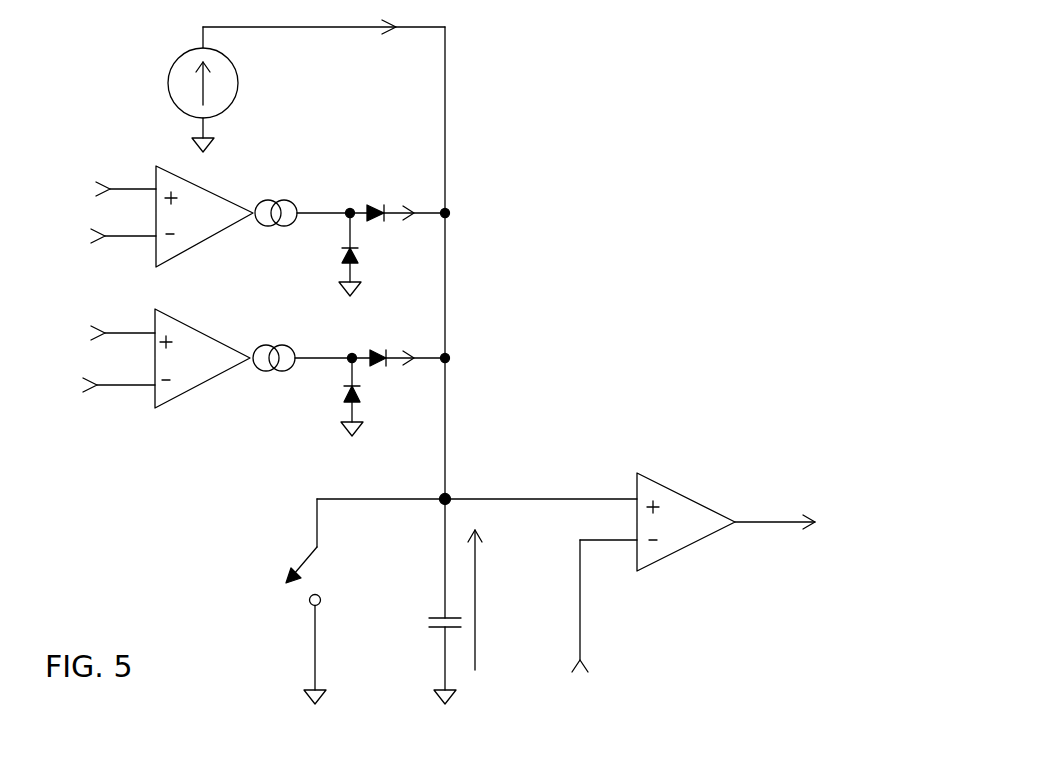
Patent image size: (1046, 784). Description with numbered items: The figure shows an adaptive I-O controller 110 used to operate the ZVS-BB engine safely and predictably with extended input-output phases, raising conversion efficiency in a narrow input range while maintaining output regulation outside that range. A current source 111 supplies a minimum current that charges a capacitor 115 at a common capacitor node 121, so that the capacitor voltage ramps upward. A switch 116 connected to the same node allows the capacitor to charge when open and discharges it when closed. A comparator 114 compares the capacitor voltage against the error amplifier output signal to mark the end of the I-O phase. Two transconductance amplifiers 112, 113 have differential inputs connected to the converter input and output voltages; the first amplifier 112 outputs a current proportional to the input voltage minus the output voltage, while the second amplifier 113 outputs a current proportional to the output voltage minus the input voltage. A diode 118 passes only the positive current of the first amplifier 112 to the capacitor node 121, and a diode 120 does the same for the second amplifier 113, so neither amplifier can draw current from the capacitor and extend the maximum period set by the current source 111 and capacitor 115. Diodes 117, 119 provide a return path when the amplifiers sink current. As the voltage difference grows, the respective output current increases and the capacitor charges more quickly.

The adaptive I-O controller 110 is at (592, 77).
The current source 111 is at (198, 89).
The transconductance amplifier 112 is at (197, 216).
The transconductance amplifier 113 is at (196, 358).
The comparator 114 is at (713, 587).
The capacitor 115 is at (452, 601).
The switch 116 is at (297, 601).
The diode 117 is at (333, 254).
The diode 118 is at (395, 200).
The diode 119 is at (335, 397).
The diode 120 is at (398, 344).
The capacitor node 121 is at (453, 490).